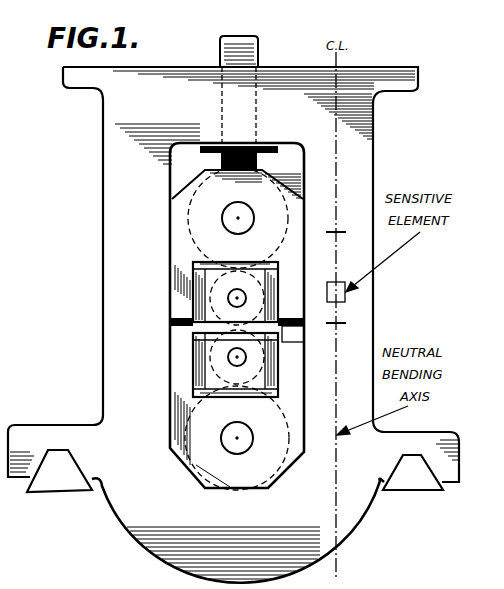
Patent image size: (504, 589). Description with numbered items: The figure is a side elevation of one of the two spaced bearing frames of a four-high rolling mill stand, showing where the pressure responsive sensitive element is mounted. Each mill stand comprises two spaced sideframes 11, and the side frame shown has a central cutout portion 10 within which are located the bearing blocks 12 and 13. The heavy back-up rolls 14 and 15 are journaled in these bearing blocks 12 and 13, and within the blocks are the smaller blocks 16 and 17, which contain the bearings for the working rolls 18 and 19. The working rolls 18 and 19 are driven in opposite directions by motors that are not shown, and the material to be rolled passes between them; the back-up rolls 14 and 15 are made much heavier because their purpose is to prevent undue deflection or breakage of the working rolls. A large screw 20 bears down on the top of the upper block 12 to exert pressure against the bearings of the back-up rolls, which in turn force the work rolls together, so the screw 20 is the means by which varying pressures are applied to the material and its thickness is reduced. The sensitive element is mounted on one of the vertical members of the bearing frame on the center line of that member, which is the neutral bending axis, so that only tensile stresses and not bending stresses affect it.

The central cutout portion 10 is at (299, 183).
The sideframe 11 is at (112, 201).
The bearing block 12 is at (178, 259).
The bearing block 13 is at (178, 383).
The back-up roll 14 is at (188, 218).
The back-up roll 15 is at (178, 455).
The smaller block 16 is at (190, 318).
The smaller block 17 is at (196, 357).
The working roll 18 is at (262, 292).
The working roll 19 is at (262, 377).
The screw 20 is at (258, 47).